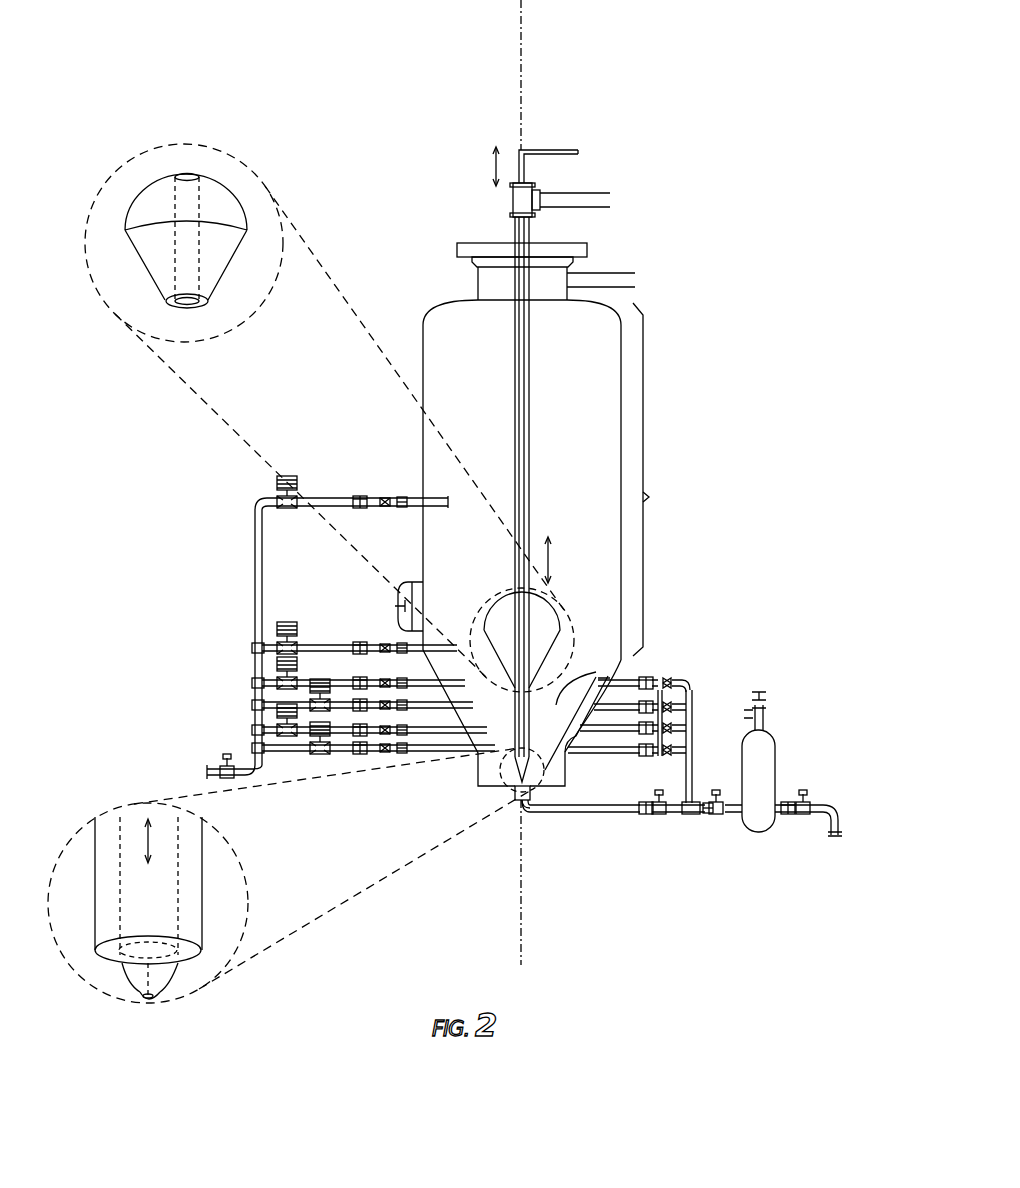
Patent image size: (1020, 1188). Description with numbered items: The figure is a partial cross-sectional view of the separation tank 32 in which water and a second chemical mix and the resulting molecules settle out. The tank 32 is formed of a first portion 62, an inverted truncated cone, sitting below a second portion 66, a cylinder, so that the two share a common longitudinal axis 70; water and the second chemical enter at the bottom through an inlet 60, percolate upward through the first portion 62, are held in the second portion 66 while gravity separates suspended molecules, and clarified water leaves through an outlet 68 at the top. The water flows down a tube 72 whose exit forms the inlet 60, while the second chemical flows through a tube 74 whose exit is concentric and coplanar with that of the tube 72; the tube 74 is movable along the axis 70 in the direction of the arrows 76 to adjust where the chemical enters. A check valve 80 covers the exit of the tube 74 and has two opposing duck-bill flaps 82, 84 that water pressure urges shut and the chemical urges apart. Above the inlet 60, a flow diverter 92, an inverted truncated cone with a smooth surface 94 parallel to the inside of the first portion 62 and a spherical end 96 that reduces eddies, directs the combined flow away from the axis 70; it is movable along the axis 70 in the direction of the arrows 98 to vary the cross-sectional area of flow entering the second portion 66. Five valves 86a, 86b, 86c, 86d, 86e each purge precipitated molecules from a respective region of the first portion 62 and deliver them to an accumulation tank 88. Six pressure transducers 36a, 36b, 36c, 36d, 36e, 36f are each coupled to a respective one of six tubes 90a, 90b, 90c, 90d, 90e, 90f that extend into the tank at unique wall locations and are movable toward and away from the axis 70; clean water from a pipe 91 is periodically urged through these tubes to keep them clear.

The separation tank 32 is at (718, 455).
The pressure transducer 36a is at (318, 754).
The pressure transducer 36b is at (275, 710).
The pressure transducer 36c is at (345, 679).
The pressure transducer 36d is at (277, 668).
The pressure transducer 36e is at (275, 624).
The pressure transducer 36f is at (277, 488).
The inlet 60 is at (508, 790).
The first portion 62 is at (632, 690).
The second portion 66 is at (657, 479).
The outlet 68 is at (628, 273).
The longitudinal axis 70 is at (521, 61).
The tube 72 is at (579, 193).
The tube 74 is at (553, 151).
The arrows 76 is at (492, 162).
The check valve 80 is at (133, 985).
The flap 82 is at (138, 1004).
The flap 84 is at (162, 993).
The valve 86a is at (659, 814).
The valve 86b is at (658, 752).
The valve 86c is at (680, 730).
The valve 86d is at (682, 704).
The valve 86e is at (664, 682).
The accumulation tank 88 is at (768, 755).
The tube 90a is at (350, 752).
The tube 90b is at (313, 735).
The tube 90c is at (348, 702).
The tube 90d is at (315, 686).
The tube 90e is at (315, 640).
The tube 90f is at (322, 501).
The pipe 91 is at (205, 768).
The flow diverter 92 is at (546, 602).
The surface 94 is at (160, 289).
The spherical end 96 is at (228, 186).
The arrows 98 is at (554, 562).